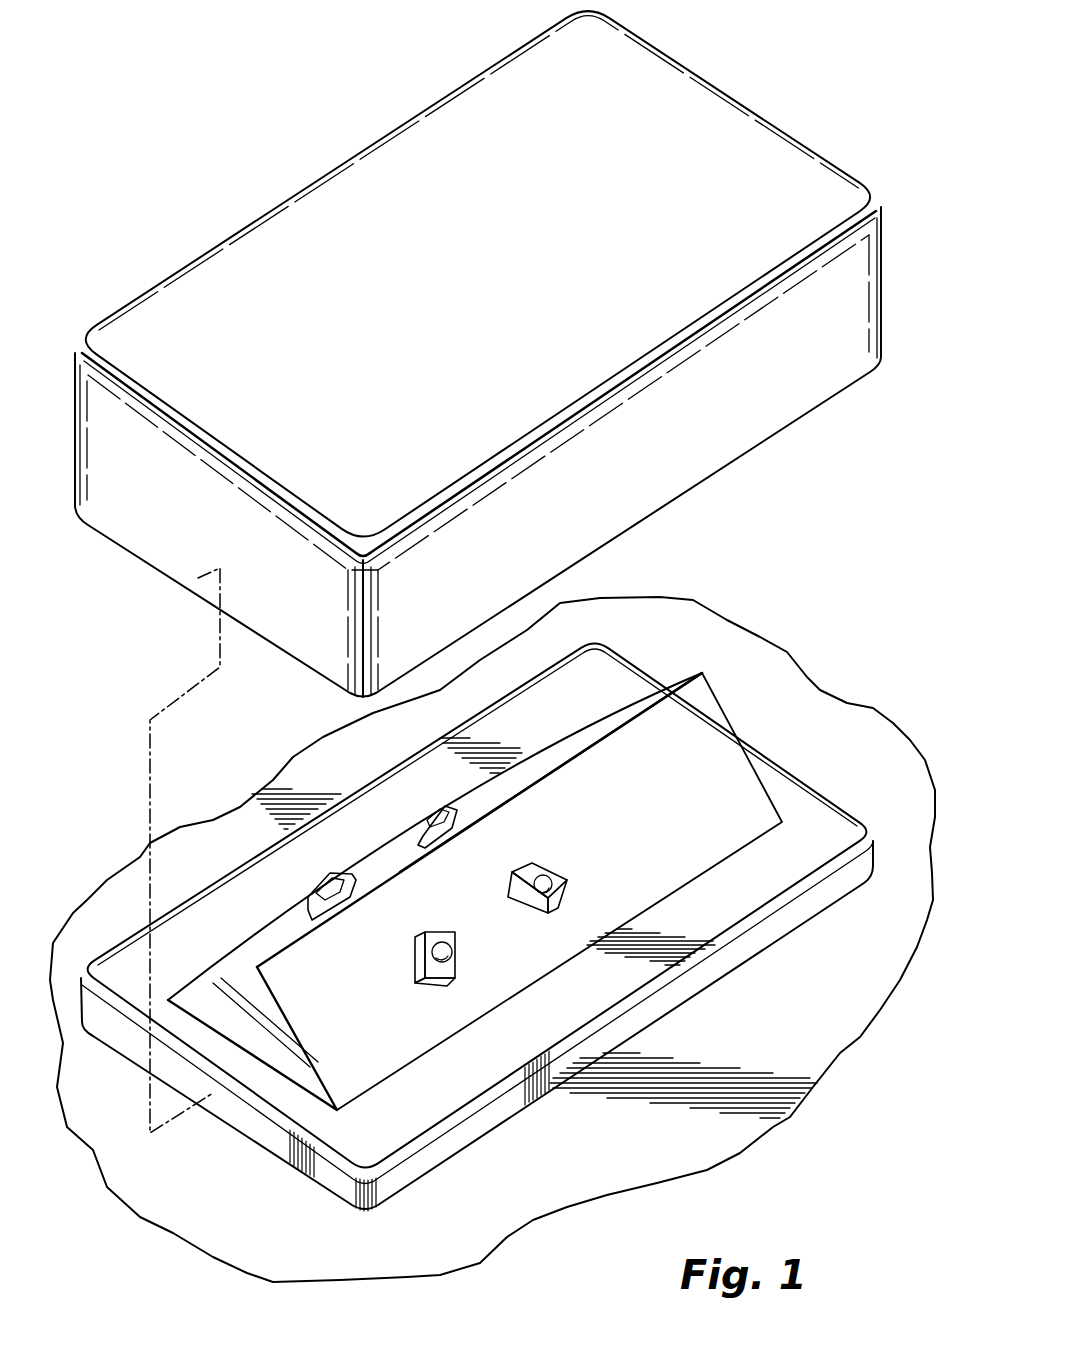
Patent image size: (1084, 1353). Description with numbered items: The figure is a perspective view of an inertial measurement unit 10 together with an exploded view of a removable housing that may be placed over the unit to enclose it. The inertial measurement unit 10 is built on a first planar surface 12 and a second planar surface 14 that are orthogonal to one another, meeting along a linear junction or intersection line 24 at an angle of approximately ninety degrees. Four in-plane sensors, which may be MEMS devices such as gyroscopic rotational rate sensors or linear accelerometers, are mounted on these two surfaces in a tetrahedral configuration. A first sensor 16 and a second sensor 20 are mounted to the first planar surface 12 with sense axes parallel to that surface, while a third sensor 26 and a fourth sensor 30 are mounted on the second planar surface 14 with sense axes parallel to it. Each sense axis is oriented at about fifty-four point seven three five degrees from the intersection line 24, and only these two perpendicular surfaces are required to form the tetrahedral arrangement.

The inertial measurement unit 10 is at (789, 721).
The first planar surface 12 is at (247, 953).
The second planar surface 14 is at (380, 1043).
The first sensor 16 is at (345, 876).
The second sensor 20 is at (422, 826).
The intersection line 24 is at (553, 768).
The third sensor 26 is at (414, 962).
The fourth sensor 30 is at (530, 866).